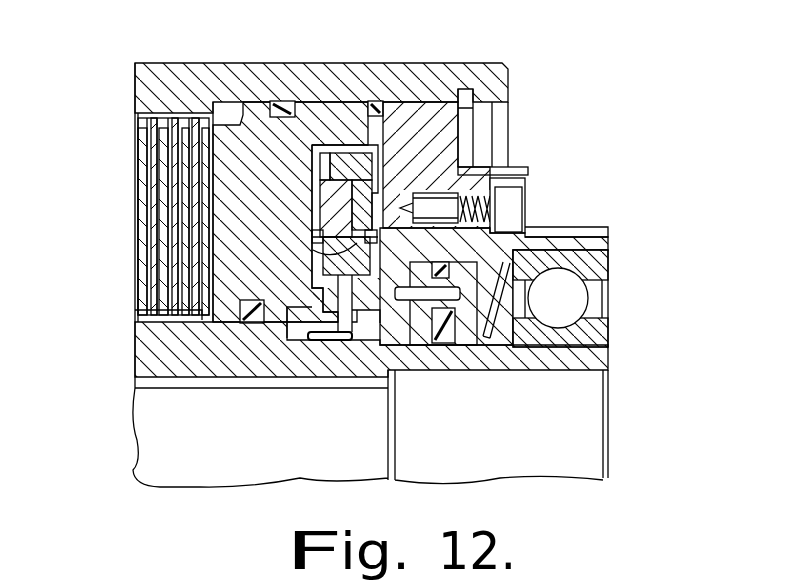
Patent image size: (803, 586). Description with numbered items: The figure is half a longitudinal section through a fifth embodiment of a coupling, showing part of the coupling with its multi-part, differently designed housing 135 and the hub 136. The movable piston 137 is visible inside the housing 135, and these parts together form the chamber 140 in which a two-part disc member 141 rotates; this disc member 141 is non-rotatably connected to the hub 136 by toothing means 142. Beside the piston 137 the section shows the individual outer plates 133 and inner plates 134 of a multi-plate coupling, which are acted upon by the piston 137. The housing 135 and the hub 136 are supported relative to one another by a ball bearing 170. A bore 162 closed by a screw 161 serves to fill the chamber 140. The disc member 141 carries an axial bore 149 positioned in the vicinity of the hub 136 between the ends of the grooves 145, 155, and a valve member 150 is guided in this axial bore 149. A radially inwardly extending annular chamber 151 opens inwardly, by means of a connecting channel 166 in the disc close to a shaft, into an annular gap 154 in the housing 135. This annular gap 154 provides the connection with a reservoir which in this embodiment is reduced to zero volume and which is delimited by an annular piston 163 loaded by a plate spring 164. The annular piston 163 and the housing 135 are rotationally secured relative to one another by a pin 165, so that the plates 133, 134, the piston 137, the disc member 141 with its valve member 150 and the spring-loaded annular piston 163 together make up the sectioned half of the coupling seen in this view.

The outer plates 133 is at (165, 148).
The inner plates 134 is at (150, 205).
The housing 135 is at (181, 80).
The hub 136 is at (150, 340).
The piston 137 is at (257, 128).
The chamber 140 is at (323, 142).
The disc member 141 is at (425, 146).
The toothing means 142 is at (317, 343).
The groove 145 is at (314, 212).
The axial bore 149 is at (312, 250).
The valve member 150 is at (337, 260).
The annular chamber 151 is at (330, 308).
The annular gap 154 is at (403, 345).
The groove 155 is at (396, 207).
The screw 161 is at (518, 222).
The bore 162 is at (495, 192).
The annular piston 163 is at (468, 338).
The plate spring 164 is at (490, 318).
The pin 165 is at (420, 300).
The connecting channel 166 is at (345, 300).
The ball bearing 170 is at (602, 258).